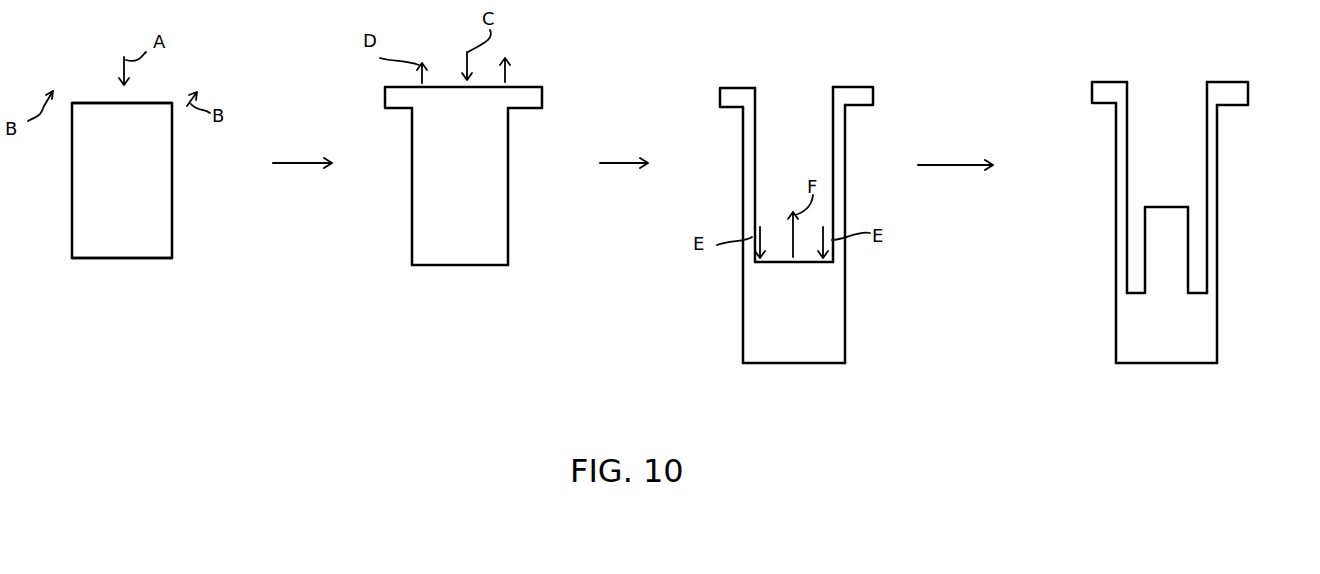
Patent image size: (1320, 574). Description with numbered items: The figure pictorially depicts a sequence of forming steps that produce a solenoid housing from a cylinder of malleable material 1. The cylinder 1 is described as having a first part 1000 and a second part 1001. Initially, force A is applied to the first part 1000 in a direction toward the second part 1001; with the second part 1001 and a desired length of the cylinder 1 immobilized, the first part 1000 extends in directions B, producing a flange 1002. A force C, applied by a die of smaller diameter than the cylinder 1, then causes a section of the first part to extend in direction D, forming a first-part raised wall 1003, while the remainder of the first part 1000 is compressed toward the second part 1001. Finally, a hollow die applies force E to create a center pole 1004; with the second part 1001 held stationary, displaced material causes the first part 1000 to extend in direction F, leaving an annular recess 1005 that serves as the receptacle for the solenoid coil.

The cylinder of malleable material 1 is at (72, 185).
The first part 1000 is at (92, 103).
The second part 1001 is at (125, 259).
The flange 1002 is at (542, 97).
The first-part raised wall 1003 is at (742, 165).
The center pole 1004 is at (1148, 247).
The annular recess 1005 is at (1198, 233).